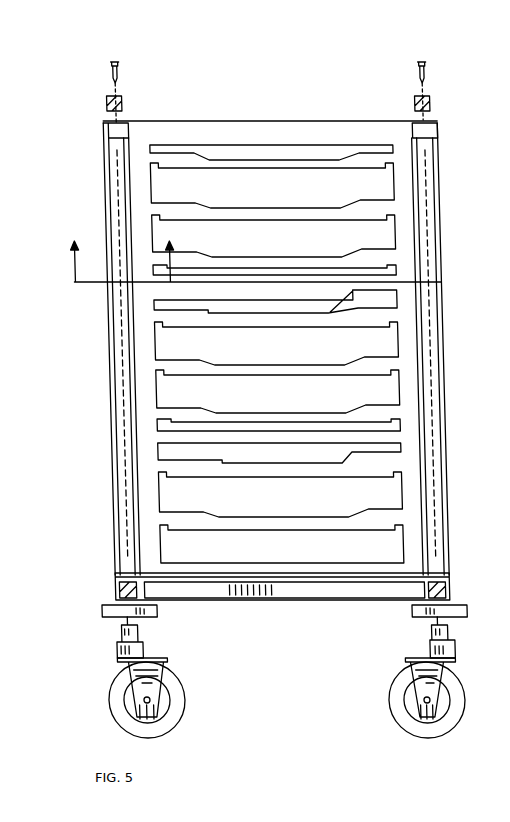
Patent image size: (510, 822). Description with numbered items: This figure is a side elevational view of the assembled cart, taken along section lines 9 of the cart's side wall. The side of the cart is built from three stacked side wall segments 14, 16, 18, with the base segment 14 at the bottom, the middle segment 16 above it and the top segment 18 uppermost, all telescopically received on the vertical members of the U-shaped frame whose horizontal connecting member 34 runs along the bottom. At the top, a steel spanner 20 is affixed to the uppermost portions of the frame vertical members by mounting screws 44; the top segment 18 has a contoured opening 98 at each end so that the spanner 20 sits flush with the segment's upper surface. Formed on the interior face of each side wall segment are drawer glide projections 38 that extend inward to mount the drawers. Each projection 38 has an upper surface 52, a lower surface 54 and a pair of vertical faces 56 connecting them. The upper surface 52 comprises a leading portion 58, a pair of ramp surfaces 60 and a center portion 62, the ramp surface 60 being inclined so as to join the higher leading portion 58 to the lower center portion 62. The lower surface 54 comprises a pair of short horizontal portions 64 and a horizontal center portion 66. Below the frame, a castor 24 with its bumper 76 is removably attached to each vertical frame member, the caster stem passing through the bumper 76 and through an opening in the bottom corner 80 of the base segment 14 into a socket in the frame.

The section line 9- 9 is at (255, 256).
The side wall segment 14 is at (434, 468).
The side wall segment 16 is at (434, 338).
The side wall segment 18 is at (434, 177).
The spanner 20 is at (104, 100).
The castor 24 is at (92, 700).
The horizontal connecting member 34 is at (104, 590).
The drawer glide projection 38 is at (146, 237).
The mounting screw 44 is at (109, 77).
The upper surface 52 is at (293, 158).
The lower surface 54 is at (243, 168).
The vertical face 56 is at (146, 185).
The leading portion 58 is at (146, 298).
The ramp surface 60 is at (146, 318).
The center portion 62 is at (390, 294).
The short horizontal portion 64 is at (389, 318).
The horizontal center portion 66 is at (316, 330).
The bumper 76 is at (86, 610).
The bottom corner 80 is at (117, 592).
The contoured opening 98 is at (105, 128).